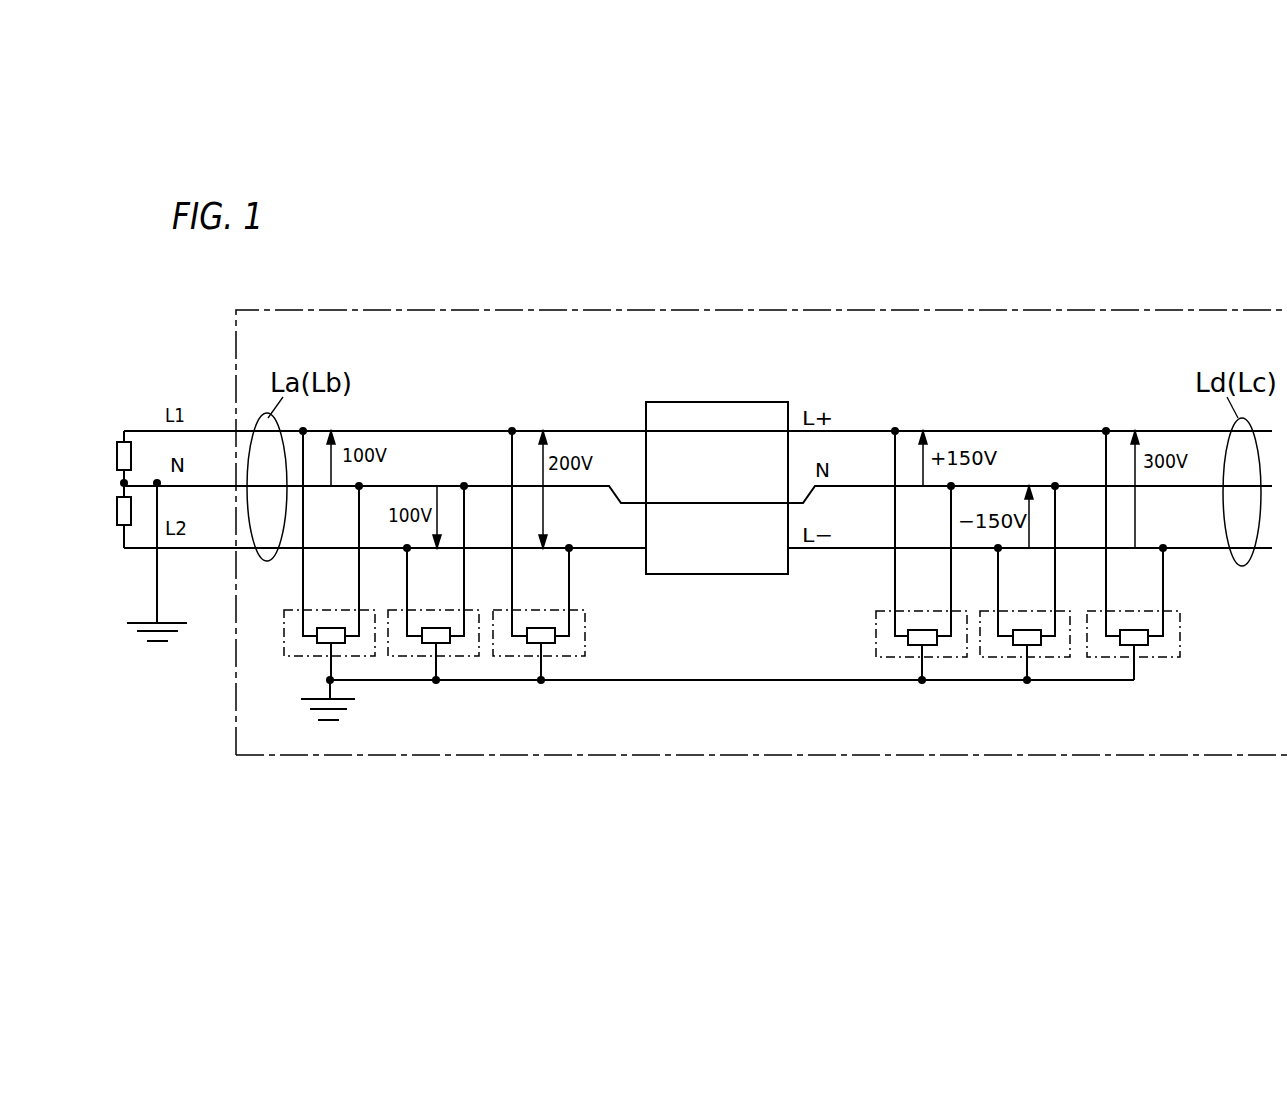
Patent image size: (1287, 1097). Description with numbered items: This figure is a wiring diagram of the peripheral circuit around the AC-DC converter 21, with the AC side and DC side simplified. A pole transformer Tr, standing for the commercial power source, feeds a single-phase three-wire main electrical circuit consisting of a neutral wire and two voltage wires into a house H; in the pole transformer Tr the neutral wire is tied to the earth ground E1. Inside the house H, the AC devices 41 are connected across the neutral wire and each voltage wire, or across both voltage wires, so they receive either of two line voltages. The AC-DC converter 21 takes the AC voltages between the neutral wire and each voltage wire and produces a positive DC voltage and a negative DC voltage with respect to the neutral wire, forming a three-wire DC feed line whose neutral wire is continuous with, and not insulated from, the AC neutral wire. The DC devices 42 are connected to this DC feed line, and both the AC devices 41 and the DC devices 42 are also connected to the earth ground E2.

The AC-DC converter 21 is at (745, 401).
The AC devices 41 is at (318, 642).
The DC devices 42 is at (929, 645).
The pole transformer Tr is at (97, 500).
The house H is at (1180, 318).
The earth ground E1 is at (159, 560).
The earth ground E2 is at (345, 700).